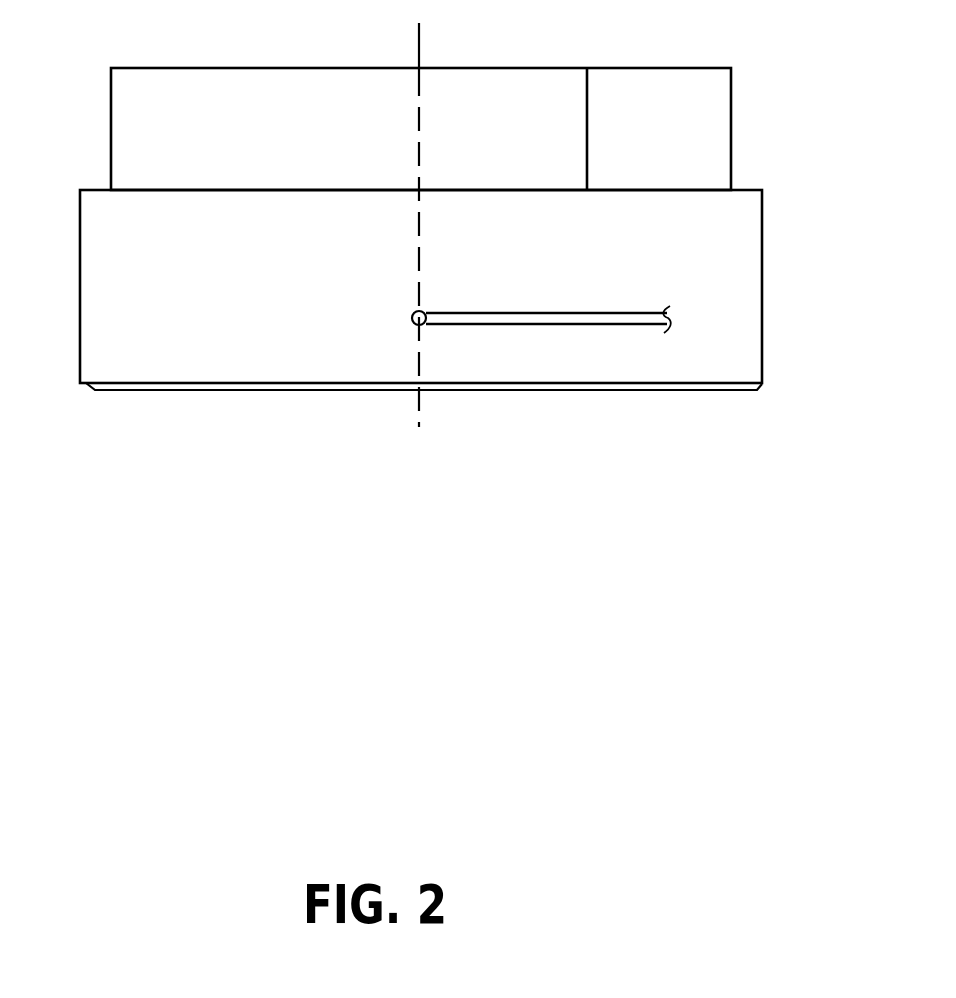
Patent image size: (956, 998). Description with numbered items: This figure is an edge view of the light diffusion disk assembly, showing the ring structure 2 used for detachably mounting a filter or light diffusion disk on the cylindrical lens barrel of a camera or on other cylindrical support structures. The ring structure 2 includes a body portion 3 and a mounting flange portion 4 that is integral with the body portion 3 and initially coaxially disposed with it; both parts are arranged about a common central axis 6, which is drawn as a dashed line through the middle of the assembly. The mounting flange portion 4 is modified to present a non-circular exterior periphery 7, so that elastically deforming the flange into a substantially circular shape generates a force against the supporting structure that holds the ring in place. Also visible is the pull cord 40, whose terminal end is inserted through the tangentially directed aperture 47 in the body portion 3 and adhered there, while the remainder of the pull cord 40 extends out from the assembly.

The ring structure 2 is at (430, 223).
The body portion 3 is at (122, 276).
The mounting flange portion 4 is at (137, 119).
The central axis 6 is at (419, 53).
The non-circular exterior periphery 7 is at (627, 143).
The pull cord 40 is at (598, 312).
The tangentially directed aperture 47 is at (427, 312).